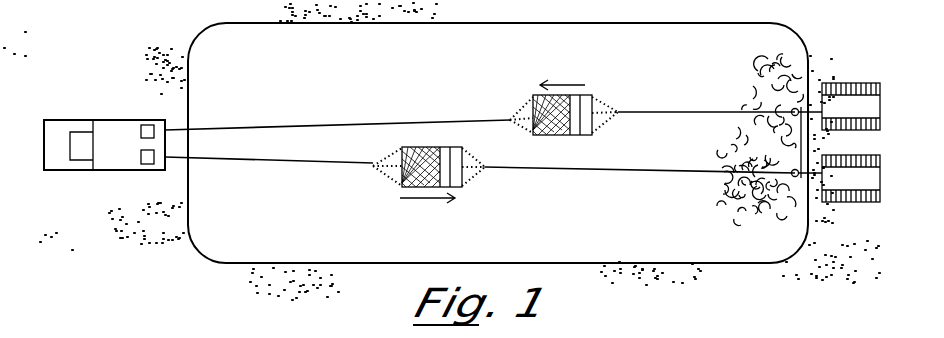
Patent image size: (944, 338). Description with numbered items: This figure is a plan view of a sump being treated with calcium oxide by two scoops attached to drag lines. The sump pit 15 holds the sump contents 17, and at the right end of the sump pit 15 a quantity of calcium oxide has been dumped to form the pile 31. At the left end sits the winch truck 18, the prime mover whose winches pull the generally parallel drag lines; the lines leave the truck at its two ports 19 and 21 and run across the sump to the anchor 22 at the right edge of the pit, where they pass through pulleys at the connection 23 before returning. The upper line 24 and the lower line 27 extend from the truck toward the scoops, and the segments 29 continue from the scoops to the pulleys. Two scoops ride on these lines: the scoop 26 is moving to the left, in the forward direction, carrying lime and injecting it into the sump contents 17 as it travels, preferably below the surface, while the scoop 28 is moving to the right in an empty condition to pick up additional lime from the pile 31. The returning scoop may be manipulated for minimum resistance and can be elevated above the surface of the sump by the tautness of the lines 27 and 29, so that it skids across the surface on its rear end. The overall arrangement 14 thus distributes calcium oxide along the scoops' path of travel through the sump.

The tank 14 is at (178, 293).
The sump pit 15 is at (352, 263).
The sump contents 17 is at (550, 231).
The winch truck 18 is at (82, 120).
The outlet port 19 is at (152, 125).
The inlet port 21 is at (148, 165).
The anchor 22 is at (880, 163).
The connector 23 is at (782, 146).
The supply line 24 is at (300, 125).
The scoop 26 is at (565, 135).
The line 27 is at (306, 162).
The scoop 28 is at (447, 147).
The line 29 is at (648, 110).
The pile 31 is at (754, 78).